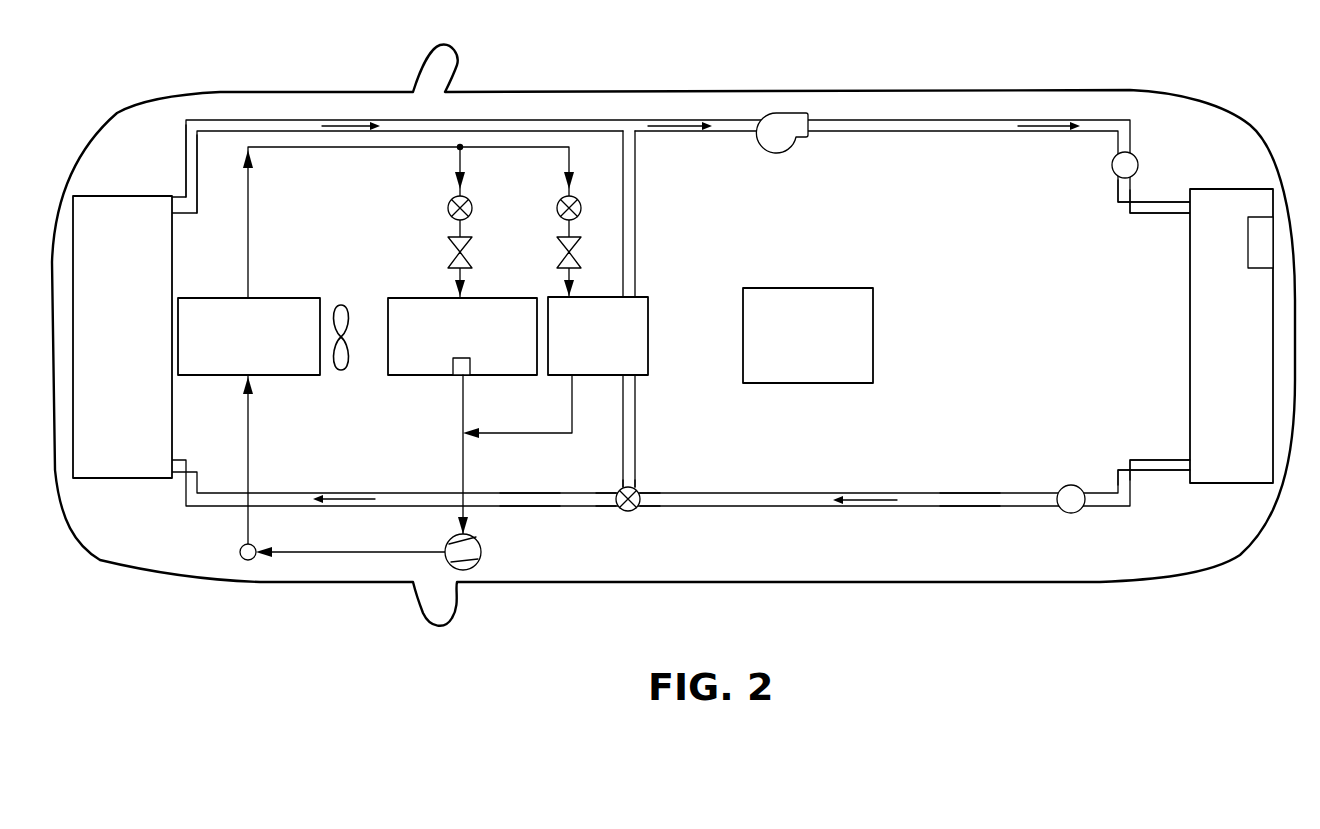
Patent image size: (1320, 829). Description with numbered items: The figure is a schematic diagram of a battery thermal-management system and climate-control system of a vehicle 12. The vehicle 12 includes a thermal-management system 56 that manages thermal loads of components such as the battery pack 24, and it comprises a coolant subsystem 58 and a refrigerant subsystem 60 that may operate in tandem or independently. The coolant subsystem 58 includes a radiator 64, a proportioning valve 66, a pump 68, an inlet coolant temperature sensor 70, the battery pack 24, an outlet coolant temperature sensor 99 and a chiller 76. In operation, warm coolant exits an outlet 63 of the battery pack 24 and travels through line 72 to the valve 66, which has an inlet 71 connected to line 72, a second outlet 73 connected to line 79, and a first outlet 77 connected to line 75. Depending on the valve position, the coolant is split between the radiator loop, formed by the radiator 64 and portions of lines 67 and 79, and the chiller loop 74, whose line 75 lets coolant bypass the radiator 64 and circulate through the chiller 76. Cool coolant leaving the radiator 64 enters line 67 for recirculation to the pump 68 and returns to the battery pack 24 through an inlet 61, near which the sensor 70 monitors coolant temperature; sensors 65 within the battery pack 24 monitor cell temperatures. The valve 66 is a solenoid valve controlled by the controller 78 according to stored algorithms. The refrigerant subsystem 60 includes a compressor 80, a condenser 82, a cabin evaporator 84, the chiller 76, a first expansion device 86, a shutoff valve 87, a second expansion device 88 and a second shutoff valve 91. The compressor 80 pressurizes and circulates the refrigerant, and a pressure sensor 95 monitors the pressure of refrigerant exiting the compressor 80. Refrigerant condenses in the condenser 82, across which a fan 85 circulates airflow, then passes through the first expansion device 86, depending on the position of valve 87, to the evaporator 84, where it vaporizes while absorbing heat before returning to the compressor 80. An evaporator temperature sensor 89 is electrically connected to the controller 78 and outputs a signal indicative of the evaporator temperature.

The vehicle 12 is at (598, 90).
The battery pack 24 is at (1231, 336).
The thermal-management system 56 is at (749, 96).
The coolant subsystem 58 is at (909, 528).
The refrigerant subsystem 60 is at (391, 244).
The inlet 61 is at (1190, 205).
The outlet 63 is at (1188, 458).
The radiator 64 is at (122, 337).
The sensors 65 is at (1260, 215).
The proportioning valve 66 is at (628, 511).
The line 67 is at (242, 132).
The pump 68 is at (778, 153).
The inlet coolant temperature sensor 70 is at (1112, 165).
The inlet 71 is at (642, 498).
The line 72 is at (927, 492).
The second outlet 73 is at (618, 507).
The chiller loop 74 is at (672, 351).
The line 75 is at (636, 447).
The chiller 76 is at (598, 336).
The first outlet 77 is at (621, 487).
The controller 78 is at (808, 335).
The line 79 is at (541, 507).
The compressor 80 is at (447, 538).
The condenser 82 is at (249, 336).
The cabin evaporator 84 is at (437, 298).
The fan 85 is at (341, 305).
The first expansion device 86 is at (448, 262).
The shutoff valve 87 is at (448, 208).
The second expansion device 88 is at (557, 262).
The evaporator temperature sensor 89 is at (453, 366).
The second shutoff valve 91 is at (557, 208).
The pressure sensor 95 is at (242, 548).
The outlet coolant temperature sensor 99 is at (1068, 488).